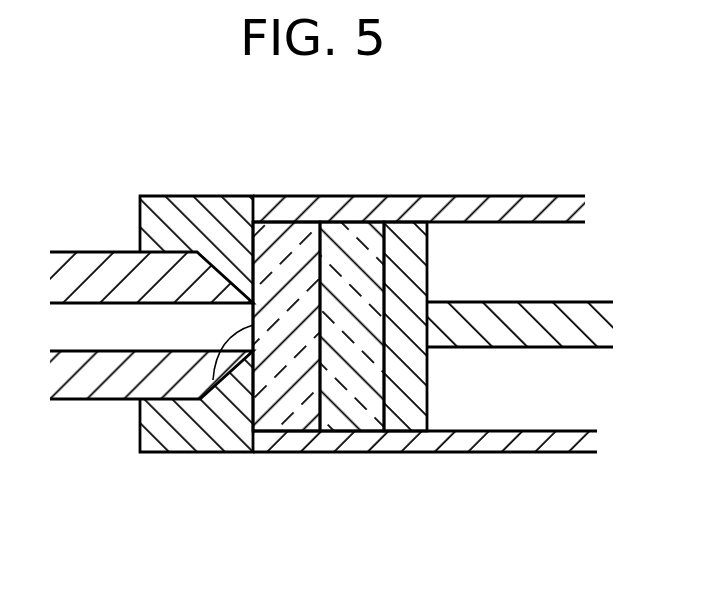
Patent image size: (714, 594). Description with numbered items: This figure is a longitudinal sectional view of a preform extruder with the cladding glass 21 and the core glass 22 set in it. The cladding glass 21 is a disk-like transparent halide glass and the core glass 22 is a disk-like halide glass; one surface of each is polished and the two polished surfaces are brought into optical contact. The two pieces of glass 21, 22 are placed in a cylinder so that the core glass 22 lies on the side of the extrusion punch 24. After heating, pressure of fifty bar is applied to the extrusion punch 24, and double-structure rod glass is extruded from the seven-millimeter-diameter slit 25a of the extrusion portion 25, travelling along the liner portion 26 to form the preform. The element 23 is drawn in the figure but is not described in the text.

The cladding glass 21 is at (295, 233).
The core glass 22 is at (360, 238).
The bottom plate 23 is at (497, 440).
The extrusion punch 24 is at (410, 236).
The extrusion portion 25 is at (207, 207).
The slit 25a is at (213, 380).
The liner portion 26 is at (107, 277).